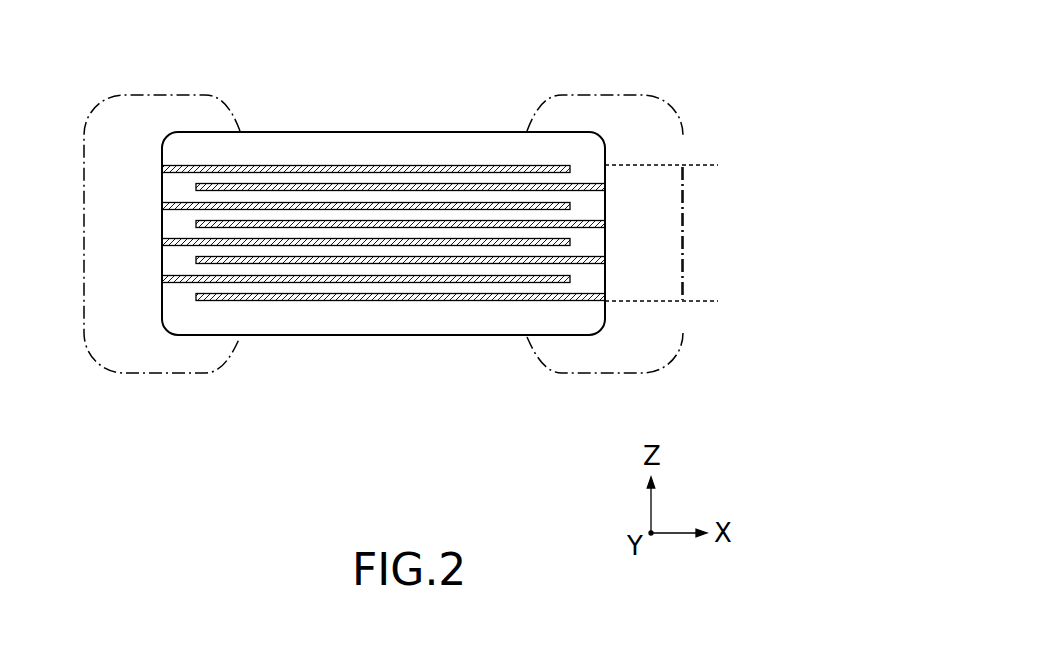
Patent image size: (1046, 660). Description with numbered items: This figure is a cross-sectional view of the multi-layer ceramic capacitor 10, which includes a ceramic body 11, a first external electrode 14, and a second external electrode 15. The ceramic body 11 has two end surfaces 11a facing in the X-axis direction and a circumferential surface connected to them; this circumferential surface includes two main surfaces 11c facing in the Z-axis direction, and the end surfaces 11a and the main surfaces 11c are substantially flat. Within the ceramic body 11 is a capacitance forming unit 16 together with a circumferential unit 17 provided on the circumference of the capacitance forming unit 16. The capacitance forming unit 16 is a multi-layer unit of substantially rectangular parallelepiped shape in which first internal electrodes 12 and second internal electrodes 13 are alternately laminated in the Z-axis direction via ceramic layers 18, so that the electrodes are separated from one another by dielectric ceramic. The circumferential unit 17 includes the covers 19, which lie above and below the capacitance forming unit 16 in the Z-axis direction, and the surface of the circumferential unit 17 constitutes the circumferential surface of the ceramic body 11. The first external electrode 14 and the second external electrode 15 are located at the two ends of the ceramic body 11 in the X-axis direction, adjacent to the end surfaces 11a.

The multi-layer ceramic capacitor 10 is at (560, 77).
The ceramic body 11 is at (605, 132).
The end surface 11a is at (161, 216).
The main surface 11c is at (341, 131).
The first internal electrode 12 is at (261, 276).
The second internal electrode 13 is at (393, 296).
The first external electrode 14 is at (105, 110).
The second external electrode 15 is at (663, 101).
The capacitance forming unit 16 is at (614, 168).
The circumferential unit 17 is at (661, 234).
The ceramic layer 18 is at (471, 233).
The cover 19 is at (611, 135).